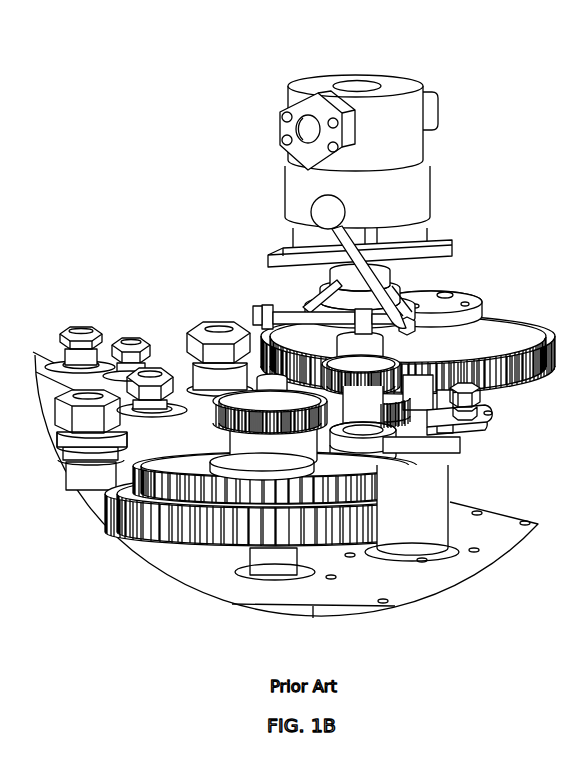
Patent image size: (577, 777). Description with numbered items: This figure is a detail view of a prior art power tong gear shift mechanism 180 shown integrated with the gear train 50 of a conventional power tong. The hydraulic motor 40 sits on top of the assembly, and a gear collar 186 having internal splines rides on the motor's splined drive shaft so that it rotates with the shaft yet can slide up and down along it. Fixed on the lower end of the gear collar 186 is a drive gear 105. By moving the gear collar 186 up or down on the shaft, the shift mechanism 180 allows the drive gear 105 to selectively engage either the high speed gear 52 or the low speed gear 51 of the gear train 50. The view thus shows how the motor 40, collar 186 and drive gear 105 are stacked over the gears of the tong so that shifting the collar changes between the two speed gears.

The hydraulic motor 40 is at (385, 74).
The power tong gear shift mechanism 180 is at (275, 272).
The high speed gear 52 is at (220, 393).
The low speed gear 51 is at (515, 325).
The gear collar 186 is at (377, 352).
The drive gear 105 is at (457, 412).
The gear train 50 is at (180, 563).